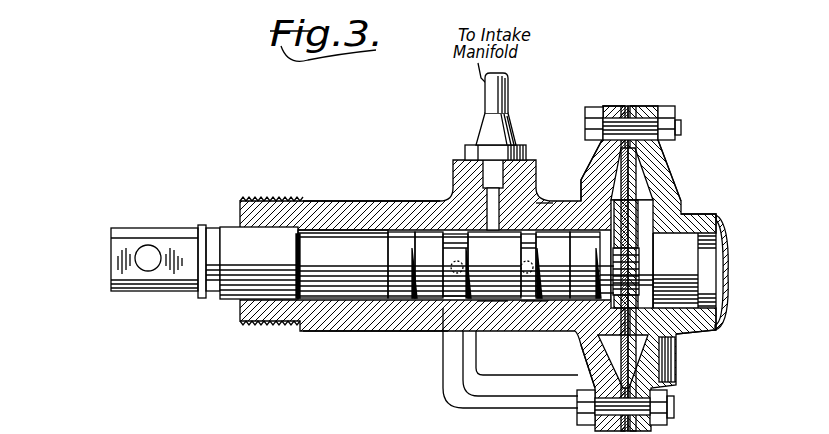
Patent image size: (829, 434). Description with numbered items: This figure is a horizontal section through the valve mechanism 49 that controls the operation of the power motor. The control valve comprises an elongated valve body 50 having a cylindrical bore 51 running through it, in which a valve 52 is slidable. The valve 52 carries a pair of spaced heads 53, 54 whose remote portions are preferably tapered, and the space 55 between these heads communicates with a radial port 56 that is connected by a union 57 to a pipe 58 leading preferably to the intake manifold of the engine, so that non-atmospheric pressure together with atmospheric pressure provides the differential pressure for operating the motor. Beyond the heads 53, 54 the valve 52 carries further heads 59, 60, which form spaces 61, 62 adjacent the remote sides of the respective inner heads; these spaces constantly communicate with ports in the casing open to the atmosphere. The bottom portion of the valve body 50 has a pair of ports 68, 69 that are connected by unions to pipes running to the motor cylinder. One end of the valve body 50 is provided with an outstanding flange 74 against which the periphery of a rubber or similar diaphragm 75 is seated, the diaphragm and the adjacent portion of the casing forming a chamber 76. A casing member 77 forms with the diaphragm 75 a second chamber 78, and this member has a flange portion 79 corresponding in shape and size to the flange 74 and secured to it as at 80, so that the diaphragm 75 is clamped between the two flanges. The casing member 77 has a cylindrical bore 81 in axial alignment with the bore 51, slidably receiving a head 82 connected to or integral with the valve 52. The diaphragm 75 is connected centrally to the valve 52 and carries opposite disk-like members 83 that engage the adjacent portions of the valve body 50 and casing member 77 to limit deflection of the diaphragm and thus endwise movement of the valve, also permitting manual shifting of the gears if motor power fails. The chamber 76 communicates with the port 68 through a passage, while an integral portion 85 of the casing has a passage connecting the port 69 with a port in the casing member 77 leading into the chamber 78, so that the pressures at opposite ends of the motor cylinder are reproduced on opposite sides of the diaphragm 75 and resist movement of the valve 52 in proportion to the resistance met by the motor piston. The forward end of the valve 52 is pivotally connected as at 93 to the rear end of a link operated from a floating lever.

The valve mechanism 49 is at (314, 192).
The valve body 50 is at (346, 192).
The cylindrical bore 51 is at (326, 290).
The valve 52 is at (219, 214).
The head 53 is at (516, 245).
The head 54 is at (450, 237).
The space 55 is at (488, 300).
The radial port 56 is at (532, 186).
The union 57 is at (480, 115).
The pipe 58 is at (495, 90).
The head 59 is at (585, 265).
The head 60 is at (385, 237).
The space 61 is at (543, 287).
The space 62 is at (418, 290).
The port 68 is at (525, 300).
The port 69 is at (443, 303).
The outstanding flange 74 is at (600, 98).
The diaphragm 75 is at (635, 177).
The chamber 76 is at (597, 170).
The casing member 77 is at (675, 193).
The second chamber 78 is at (670, 363).
The flange portion 79 is at (638, 98).
The securing means 80 is at (674, 121).
The cylindrical bore 81 is at (678, 248).
The head 82 is at (708, 243).
The disk-like members 83 is at (572, 340).
The integral portion 85 is at (463, 378).
The pivotal connection 93 is at (140, 238).